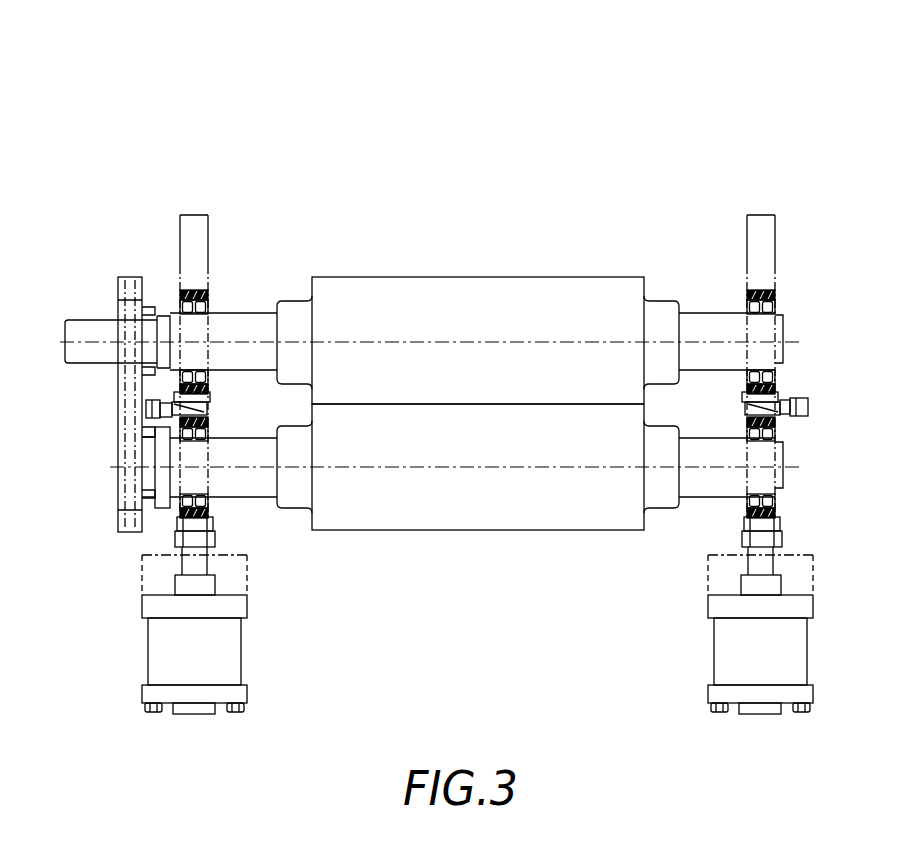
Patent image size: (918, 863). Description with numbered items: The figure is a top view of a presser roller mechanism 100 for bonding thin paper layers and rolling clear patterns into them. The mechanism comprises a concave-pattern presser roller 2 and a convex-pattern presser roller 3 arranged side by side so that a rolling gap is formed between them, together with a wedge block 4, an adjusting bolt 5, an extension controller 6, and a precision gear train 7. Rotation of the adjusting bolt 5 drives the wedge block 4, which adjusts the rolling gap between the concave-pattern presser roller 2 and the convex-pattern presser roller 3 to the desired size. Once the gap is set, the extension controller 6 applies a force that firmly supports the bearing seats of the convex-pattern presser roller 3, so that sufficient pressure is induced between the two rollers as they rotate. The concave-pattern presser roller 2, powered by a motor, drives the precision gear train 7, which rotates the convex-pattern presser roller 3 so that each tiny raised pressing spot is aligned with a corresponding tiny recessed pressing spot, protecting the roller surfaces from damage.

The presser roller mechanism 100 is at (740, 85).
The concave-pattern presser roller 2 is at (507, 290).
The convex-pattern presser roller 3 is at (521, 520).
The wedge block 4 is at (778, 416).
The adjusting bolt 5 is at (808, 408).
The extension controller 6 is at (800, 648).
The precision gear train 7 is at (101, 420).